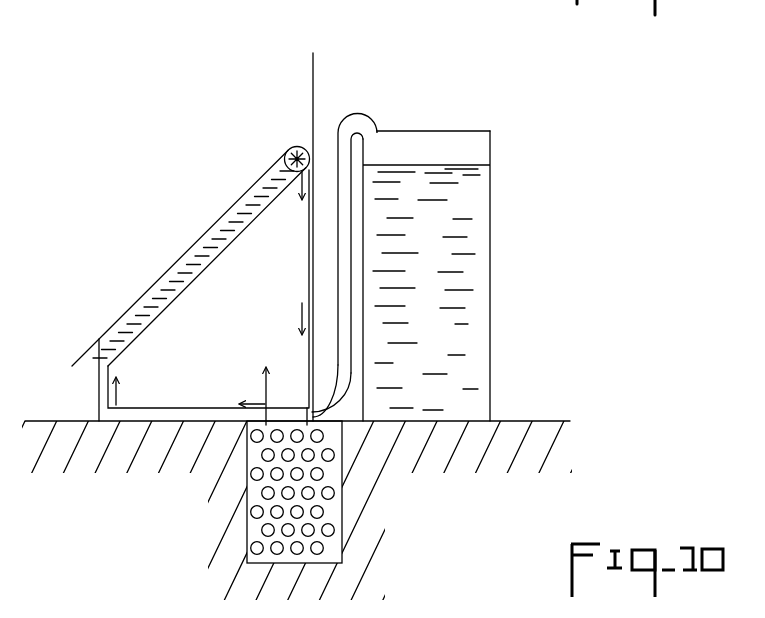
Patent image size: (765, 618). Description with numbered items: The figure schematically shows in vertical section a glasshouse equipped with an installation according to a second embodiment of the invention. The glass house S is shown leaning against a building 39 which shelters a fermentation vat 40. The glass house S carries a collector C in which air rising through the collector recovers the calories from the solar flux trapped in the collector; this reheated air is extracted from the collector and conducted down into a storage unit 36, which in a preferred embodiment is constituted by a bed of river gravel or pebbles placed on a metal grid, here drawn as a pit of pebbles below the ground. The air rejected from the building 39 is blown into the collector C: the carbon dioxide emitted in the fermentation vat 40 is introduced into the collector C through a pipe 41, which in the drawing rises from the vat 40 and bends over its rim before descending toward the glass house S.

The storage unit 36 is at (266, 527).
The building 39 is at (433, 106).
The fermentation vat 40 is at (492, 262).
The pipe 41 is at (343, 252).
The collector C is at (201, 233).
The glass house S is at (242, 329).